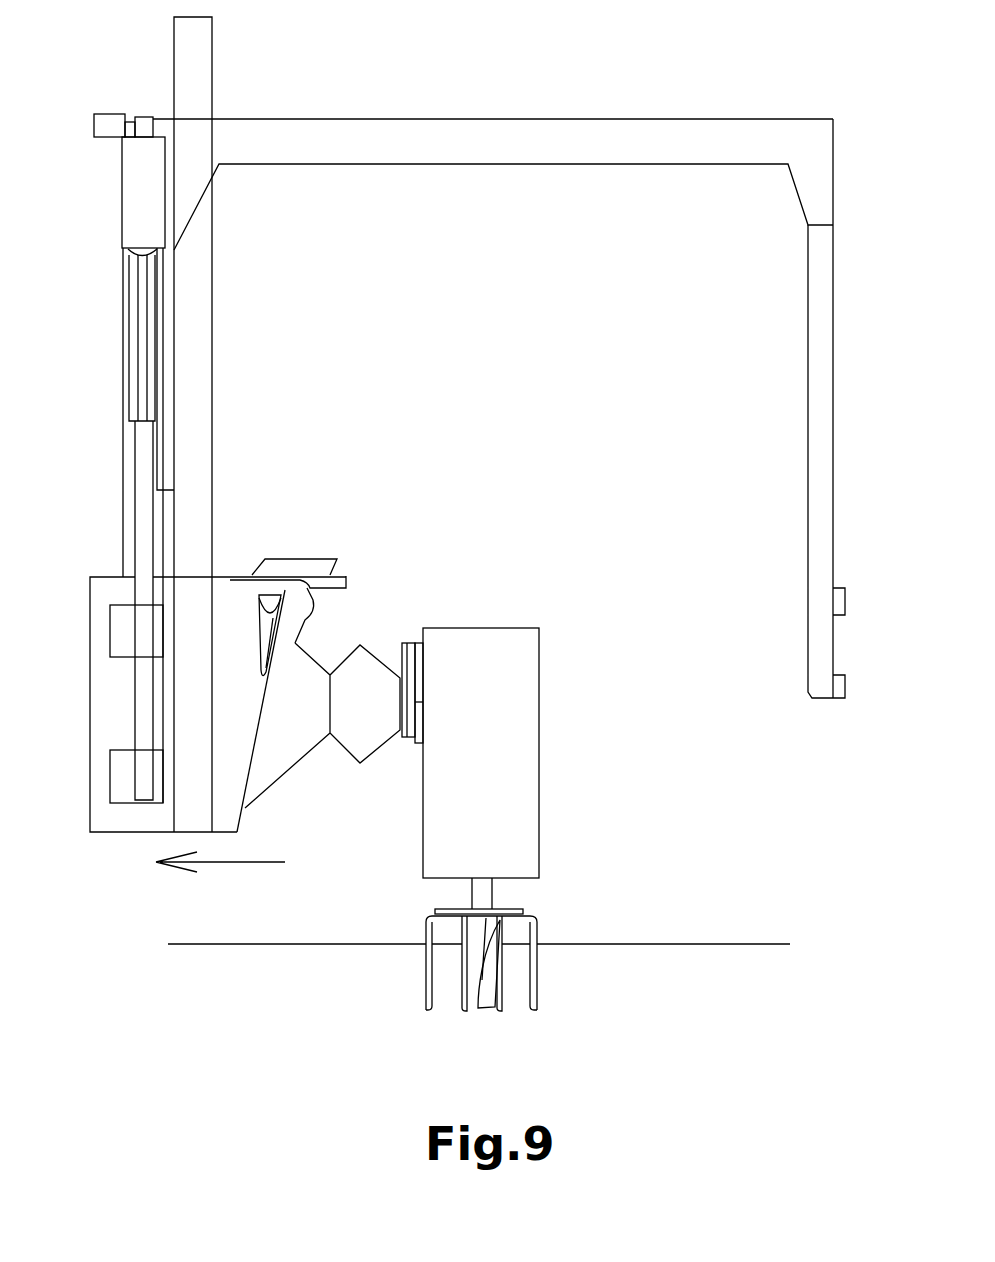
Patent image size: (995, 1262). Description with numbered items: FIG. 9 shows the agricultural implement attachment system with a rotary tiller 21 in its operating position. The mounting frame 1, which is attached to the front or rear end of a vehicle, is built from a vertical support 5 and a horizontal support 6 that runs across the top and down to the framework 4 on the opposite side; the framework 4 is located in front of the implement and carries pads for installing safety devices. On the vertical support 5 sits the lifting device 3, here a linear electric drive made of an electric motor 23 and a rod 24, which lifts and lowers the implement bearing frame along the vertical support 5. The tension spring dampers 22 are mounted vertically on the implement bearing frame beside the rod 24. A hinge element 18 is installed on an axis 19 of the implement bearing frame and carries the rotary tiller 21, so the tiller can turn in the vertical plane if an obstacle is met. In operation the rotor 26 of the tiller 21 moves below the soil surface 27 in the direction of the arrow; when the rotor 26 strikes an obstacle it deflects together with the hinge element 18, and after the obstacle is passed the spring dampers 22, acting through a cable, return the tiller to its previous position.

The mounting frame 1 is at (130, 490).
The lifting device 3 is at (142, 340).
The framework 4 is at (818, 368).
The vertical support 5 is at (187, 490).
The horizontal support 6 is at (414, 145).
The hinge element 18 is at (310, 688).
The axis 19 is at (277, 598).
The rotary tiller 21 is at (516, 867).
The tension spring damper 22 is at (130, 628).
The electric motor 23 is at (143, 209).
The rod 24 is at (143, 535).
The rotor 26 is at (477, 957).
The soil surface 27 is at (648, 942).